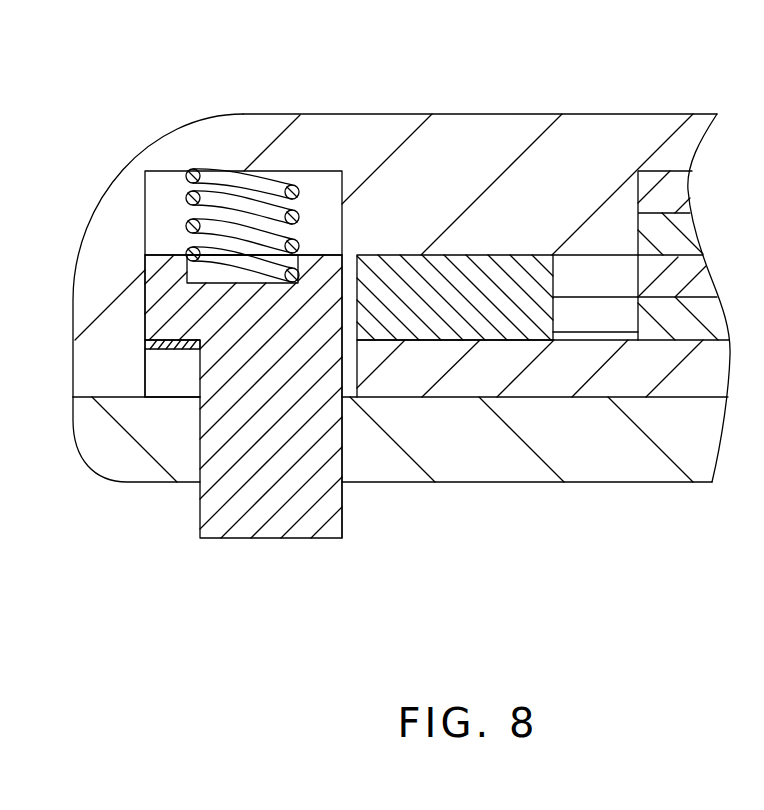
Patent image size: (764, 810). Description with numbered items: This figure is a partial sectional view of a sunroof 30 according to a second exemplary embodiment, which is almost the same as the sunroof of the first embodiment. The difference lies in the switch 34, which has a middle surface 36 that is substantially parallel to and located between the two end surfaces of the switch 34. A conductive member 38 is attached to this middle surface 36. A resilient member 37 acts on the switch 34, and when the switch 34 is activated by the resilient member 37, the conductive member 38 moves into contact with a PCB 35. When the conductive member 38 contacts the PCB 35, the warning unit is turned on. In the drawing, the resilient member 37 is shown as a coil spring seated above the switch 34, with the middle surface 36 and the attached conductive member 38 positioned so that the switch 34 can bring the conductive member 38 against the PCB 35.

The sunroof 30 is at (567, 50).
The switch 34 is at (252, 528).
The PCB 35 is at (473, 457).
The middle surface 36 is at (145, 351).
The resilient member 37 is at (270, 187).
The conductive member 38 is at (170, 352).